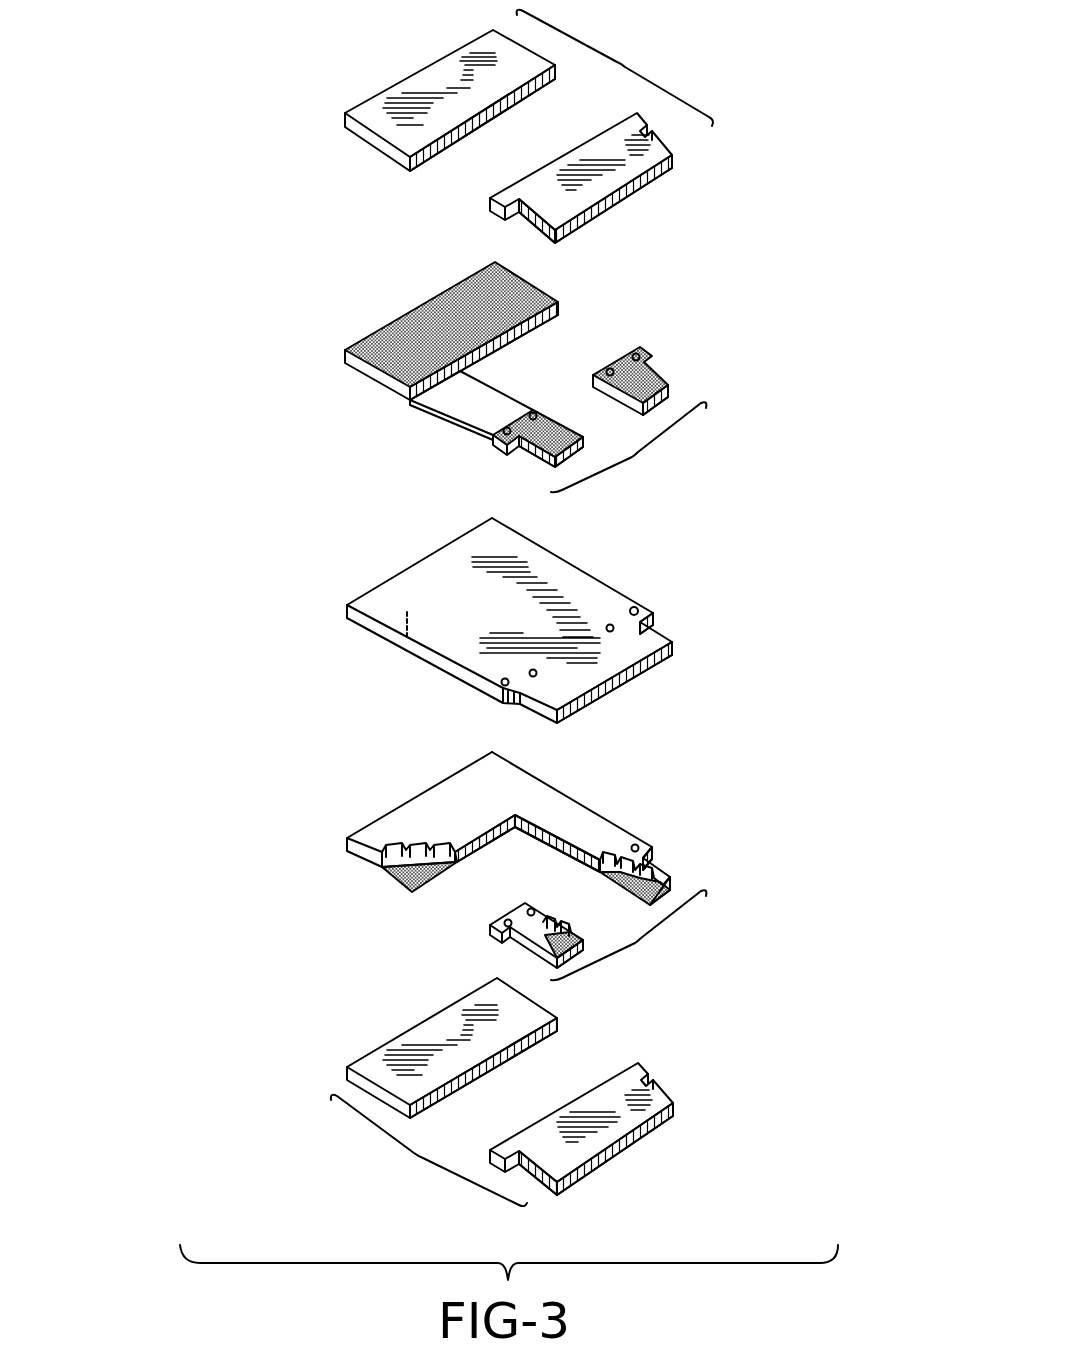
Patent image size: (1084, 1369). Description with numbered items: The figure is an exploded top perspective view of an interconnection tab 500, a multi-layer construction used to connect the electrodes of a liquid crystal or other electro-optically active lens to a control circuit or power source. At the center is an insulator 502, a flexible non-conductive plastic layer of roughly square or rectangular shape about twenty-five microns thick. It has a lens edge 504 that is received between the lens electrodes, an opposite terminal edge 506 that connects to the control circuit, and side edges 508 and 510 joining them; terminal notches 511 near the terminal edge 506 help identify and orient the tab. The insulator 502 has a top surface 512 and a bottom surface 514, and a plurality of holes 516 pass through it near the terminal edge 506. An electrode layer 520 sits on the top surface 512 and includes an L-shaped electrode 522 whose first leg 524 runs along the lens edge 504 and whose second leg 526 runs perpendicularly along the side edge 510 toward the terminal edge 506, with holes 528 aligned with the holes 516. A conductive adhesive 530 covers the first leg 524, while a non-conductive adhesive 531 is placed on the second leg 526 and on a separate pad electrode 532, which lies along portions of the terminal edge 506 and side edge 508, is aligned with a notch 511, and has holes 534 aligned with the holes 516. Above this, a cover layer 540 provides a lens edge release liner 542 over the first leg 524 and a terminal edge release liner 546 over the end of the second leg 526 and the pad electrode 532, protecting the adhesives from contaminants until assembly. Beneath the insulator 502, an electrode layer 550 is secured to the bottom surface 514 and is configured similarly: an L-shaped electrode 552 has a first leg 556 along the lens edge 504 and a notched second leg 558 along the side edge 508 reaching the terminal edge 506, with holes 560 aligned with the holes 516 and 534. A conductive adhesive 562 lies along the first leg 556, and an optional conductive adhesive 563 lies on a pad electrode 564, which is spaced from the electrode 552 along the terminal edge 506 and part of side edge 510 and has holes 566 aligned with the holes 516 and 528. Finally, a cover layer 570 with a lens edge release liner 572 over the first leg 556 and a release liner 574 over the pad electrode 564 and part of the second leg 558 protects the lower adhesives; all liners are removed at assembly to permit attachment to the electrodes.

The interconnection tab 500 is at (200, 97).
The cover layer 540 is at (638, 54).
The lens edge release liner 542 is at (440, 75).
The terminal edge release liner 546 is at (612, 155).
The electrode layer 520 is at (660, 472).
The L-shaped electrode 522 is at (440, 278).
The first leg 524 is at (362, 344).
The second leg 526 is at (405, 395).
The holes 528 is at (500, 426).
The conductive adhesive 530 is at (430, 318).
The non-conductive adhesive 531 is at (623, 372).
The pad electrode 532 is at (663, 348).
The holes 534 is at (627, 350).
The insulator 502 is at (652, 676).
The lens edge 504 is at (380, 582).
The terminal edge 506 is at (598, 700).
The side edge 508 is at (560, 556).
The side edge 510 is at (455, 676).
The terminal notches 511 is at (655, 620).
The top surface 512 is at (445, 572).
The bottom surface 514 is at (410, 637).
The holes 516 is at (633, 605).
The electrode layer 550 is at (662, 958).
The L-shaped electrode 552 is at (418, 790).
The first leg 556 is at (365, 820).
The second leg 558 is at (565, 797).
The holes 560 is at (640, 840).
The conductive adhesive 562 is at (392, 880).
The conductive adhesive 563 is at (655, 905).
The pad electrode 564 is at (485, 940).
The holes 566 is at (532, 905).
The cover layer 570 is at (396, 1168).
The lens edge release liner 572 is at (428, 1038).
The release liner 574 is at (613, 1108).